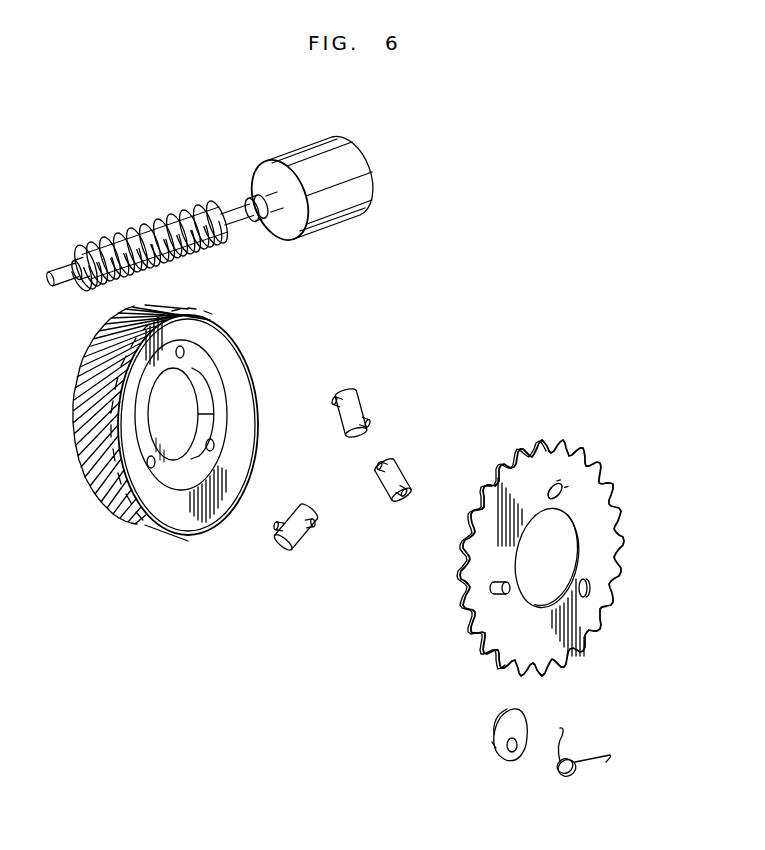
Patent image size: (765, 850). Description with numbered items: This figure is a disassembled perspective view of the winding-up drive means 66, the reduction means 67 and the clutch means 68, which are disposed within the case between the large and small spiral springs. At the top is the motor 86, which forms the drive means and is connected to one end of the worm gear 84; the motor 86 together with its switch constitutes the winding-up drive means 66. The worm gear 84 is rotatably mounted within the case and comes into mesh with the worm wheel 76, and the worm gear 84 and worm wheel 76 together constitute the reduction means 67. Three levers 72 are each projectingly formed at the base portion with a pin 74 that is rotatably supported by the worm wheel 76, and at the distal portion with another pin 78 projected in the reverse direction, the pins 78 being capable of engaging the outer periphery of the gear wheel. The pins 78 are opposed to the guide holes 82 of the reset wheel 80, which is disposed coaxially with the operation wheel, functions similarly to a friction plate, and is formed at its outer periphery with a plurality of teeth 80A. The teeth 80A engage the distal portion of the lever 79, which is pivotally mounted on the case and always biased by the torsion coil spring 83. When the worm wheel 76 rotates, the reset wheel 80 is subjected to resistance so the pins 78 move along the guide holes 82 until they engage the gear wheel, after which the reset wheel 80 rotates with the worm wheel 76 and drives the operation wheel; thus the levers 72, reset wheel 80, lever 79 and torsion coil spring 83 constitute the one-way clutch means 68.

The winding-up drive means 66 is at (383, 184).
The reduction means 67 is at (222, 423).
The clutch means 68 is at (538, 531).
The levers 72 is at (362, 400).
The pin 74 is at (332, 403).
The worm wheel 76 is at (238, 370).
The pin 78 is at (402, 496).
The lever 79 is at (520, 722).
The reset wheel 80 is at (605, 536).
The teeth 80A is at (470, 614).
The guide holes 82 is at (564, 490).
The torsion coil spring 83 is at (596, 760).
The worm gear 84 is at (163, 237).
The motor 86 is at (356, 222).